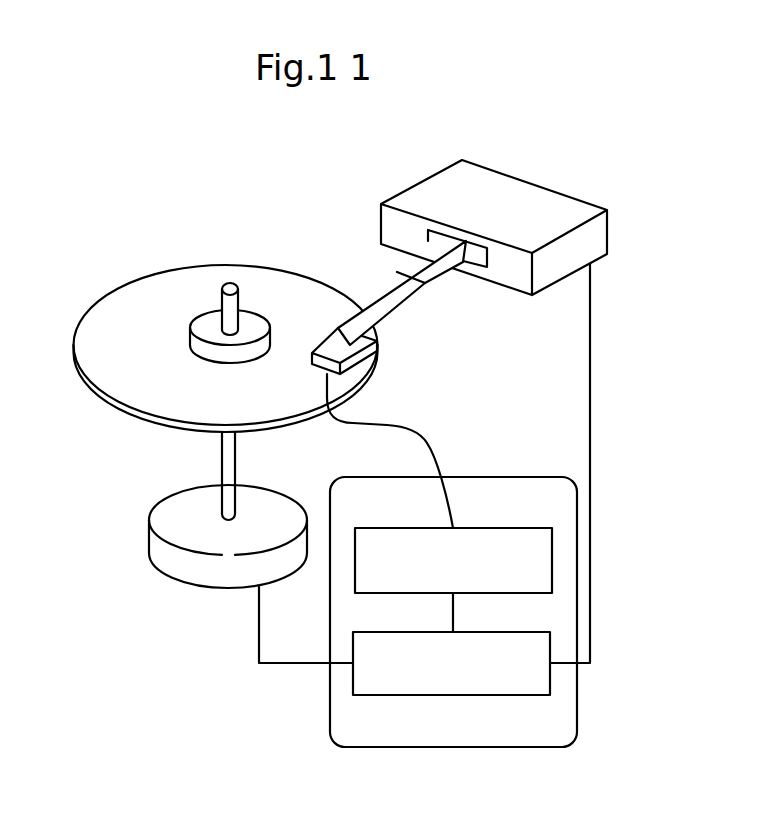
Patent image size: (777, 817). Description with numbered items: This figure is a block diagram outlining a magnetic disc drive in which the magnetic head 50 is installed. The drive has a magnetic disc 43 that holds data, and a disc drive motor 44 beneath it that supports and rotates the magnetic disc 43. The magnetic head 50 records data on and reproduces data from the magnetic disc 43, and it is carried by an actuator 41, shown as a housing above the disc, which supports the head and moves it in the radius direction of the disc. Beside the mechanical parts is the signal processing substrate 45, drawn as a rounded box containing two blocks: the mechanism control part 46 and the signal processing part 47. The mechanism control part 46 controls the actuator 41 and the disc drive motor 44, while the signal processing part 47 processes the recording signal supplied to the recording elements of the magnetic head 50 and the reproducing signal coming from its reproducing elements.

The actuator 41 is at (515, 193).
The magnetic disc 43 is at (124, 398).
The disc drive motor 44 is at (201, 573).
The signal processing substrate 45 is at (497, 475).
The mechanism control part 46 is at (478, 630).
The signal processing part 47 is at (478, 530).
The magnetic head 50 is at (380, 345).